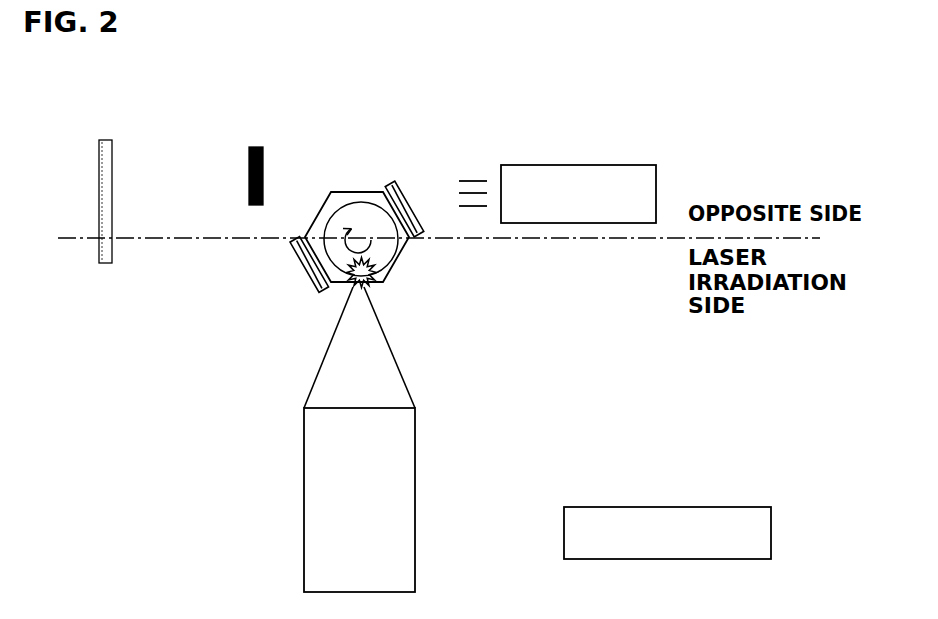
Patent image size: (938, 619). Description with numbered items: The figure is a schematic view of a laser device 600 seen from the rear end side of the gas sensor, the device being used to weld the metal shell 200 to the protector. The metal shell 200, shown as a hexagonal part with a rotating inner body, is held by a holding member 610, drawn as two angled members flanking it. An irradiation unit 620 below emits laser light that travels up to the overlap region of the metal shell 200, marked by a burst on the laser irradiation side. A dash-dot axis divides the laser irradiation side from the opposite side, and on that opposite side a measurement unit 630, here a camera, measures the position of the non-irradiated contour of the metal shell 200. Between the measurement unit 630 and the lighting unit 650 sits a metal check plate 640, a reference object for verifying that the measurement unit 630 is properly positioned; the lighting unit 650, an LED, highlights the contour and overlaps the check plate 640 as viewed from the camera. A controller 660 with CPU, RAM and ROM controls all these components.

The metal shell 200 is at (365, 192).
The laser device 600 is at (483, 141).
The holding member 610 is at (330, 289).
The irradiation unit 620 is at (415, 485).
The measurement unit 630 is at (617, 165).
The check plate 640 is at (264, 162).
The lighting unit 650 is at (108, 152).
The controller 660 is at (662, 507).